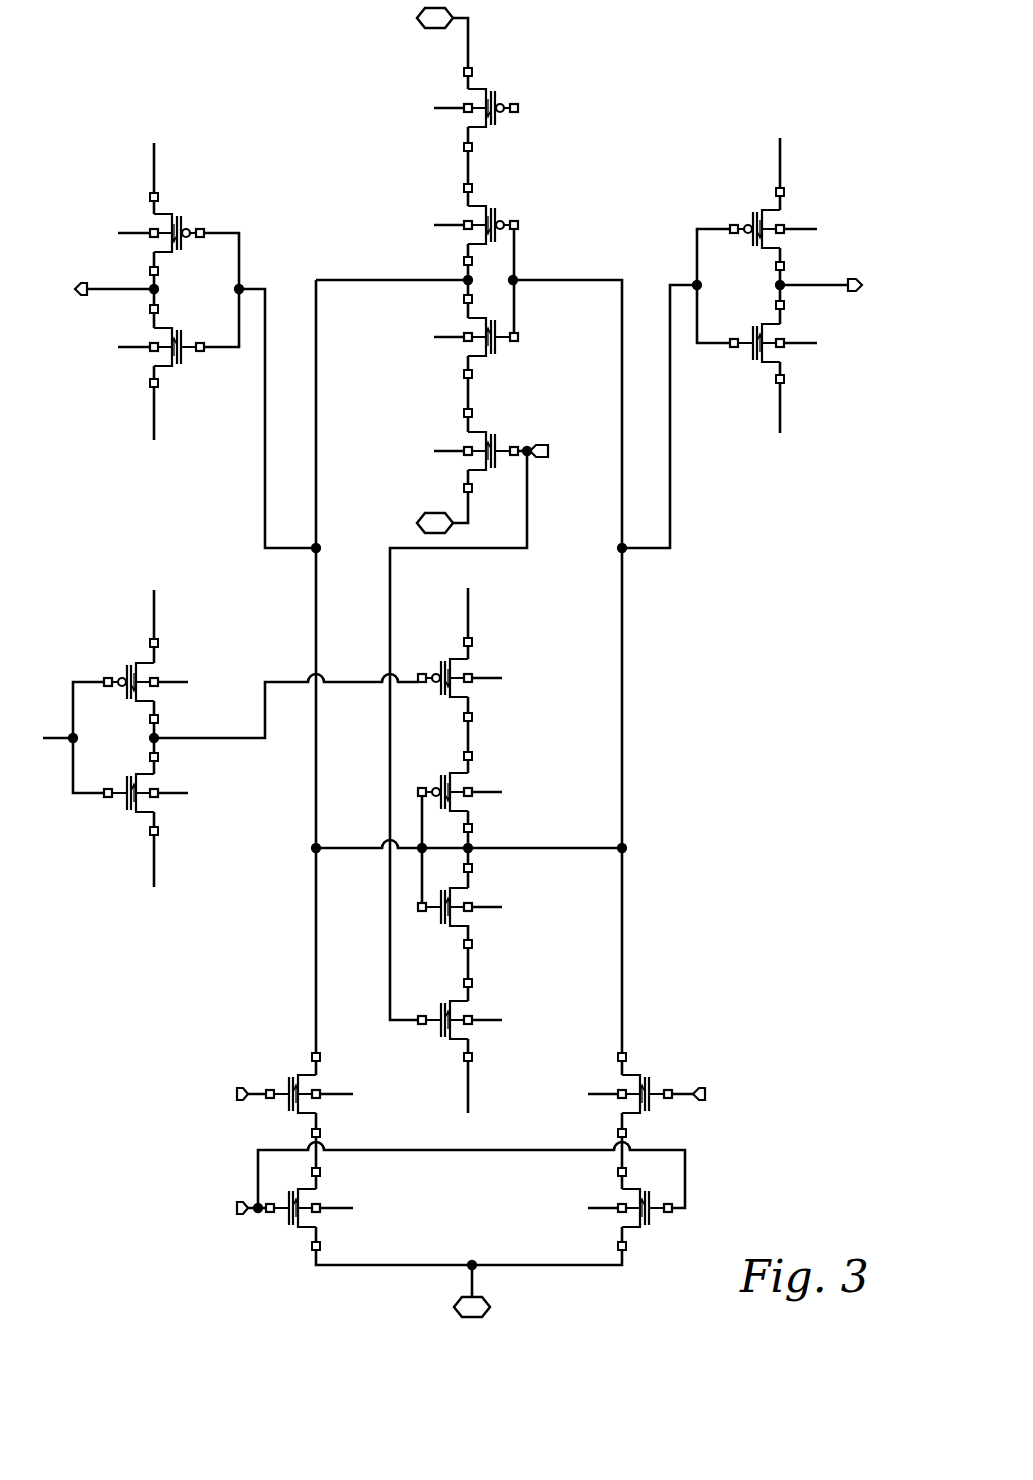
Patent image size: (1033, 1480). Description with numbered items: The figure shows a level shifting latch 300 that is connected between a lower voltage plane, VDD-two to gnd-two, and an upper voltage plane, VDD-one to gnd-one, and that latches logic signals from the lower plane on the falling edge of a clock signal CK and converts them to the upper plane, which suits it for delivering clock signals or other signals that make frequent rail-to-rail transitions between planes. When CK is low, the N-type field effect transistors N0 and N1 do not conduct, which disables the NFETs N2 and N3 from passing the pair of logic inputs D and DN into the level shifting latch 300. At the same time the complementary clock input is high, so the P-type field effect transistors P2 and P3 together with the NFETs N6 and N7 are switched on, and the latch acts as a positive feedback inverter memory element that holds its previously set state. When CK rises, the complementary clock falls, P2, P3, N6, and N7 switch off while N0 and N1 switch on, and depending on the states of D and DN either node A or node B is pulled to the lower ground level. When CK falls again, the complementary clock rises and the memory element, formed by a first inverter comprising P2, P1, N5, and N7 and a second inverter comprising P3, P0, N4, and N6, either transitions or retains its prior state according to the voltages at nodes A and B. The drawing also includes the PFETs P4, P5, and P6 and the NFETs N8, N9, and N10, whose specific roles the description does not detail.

The level shifting latch 300 is at (702, 56).
The P-type field effect transistor P0 is at (462, 781).
The P-type field effect transistor P1 is at (476, 214).
The P-type field effect transistor P2 is at (476, 97).
The P-type field effect transistor P3 is at (462, 668).
The P-type field effect transistor P4 is at (149, 671).
The P-type field effect transistor P5 is at (775, 214).
The P-type field effect transistor P6 is at (162, 219).
The N-type field effect transistor N0 is at (312, 1198).
The N-type field effect transistor N1 is at (627, 1198).
The N-type field effect transistor N2 is at (312, 1083).
The N-type field effect transistor N3 is at (627, 1083).
The N-type field effect transistor N4 is at (464, 896).
The N-type field effect transistor N5 is at (474, 325).
The N-type field effect transistor N6 is at (464, 1009).
The N-type field effect transistor N7 is at (474, 439).
The N-type field effect transistor N8 is at (150, 783).
The N-type field effect transistor N9 is at (776, 328).
The N-type field effect transistor N10 is at (154, 332).